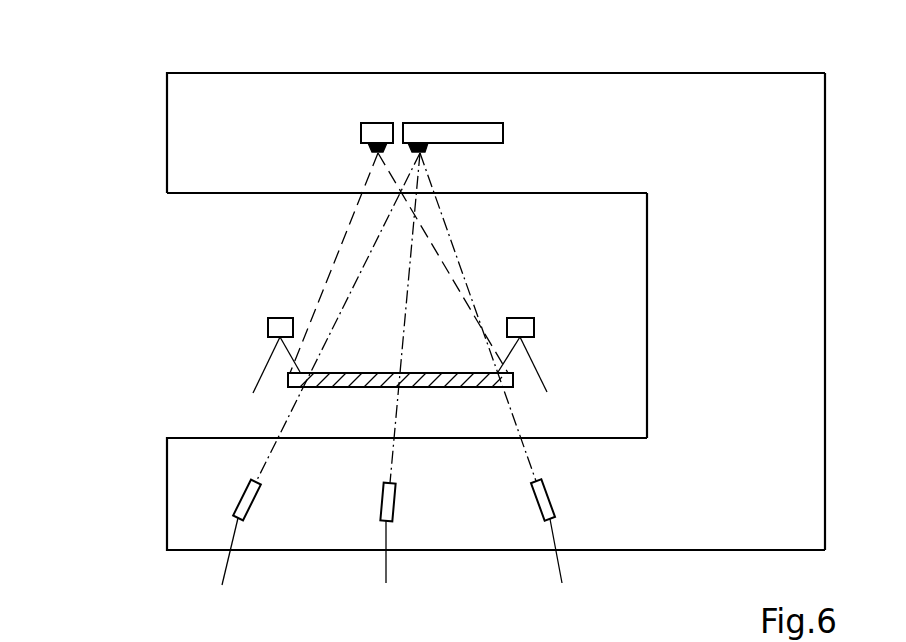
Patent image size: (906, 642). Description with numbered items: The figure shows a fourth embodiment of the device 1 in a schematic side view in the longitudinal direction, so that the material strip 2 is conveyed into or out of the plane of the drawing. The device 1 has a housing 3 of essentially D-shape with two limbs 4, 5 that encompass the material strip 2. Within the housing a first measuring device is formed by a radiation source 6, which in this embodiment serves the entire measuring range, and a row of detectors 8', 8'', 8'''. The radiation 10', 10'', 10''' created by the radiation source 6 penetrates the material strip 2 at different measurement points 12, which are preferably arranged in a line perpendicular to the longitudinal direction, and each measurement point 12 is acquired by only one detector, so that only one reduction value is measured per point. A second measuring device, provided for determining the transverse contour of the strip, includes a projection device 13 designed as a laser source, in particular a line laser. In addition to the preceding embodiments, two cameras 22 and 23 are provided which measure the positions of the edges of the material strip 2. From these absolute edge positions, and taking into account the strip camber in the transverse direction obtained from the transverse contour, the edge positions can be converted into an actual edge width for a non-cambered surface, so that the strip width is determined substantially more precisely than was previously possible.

The device 1 is at (106, 108).
The material strip 2 is at (295, 388).
The housing 3 is at (813, 260).
The limb 4 is at (237, 92).
The limb 5 is at (312, 532).
The radiation source 6 is at (475, 131).
The detector 8' is at (236, 546).
The detector 8'' is at (386, 548).
The detector 8''' is at (555, 545).
The radiation 10' is at (338, 317).
The radiation 10'' is at (341, 318).
The radiation 10''' is at (496, 317).
The measurement point 12 is at (403, 386).
The projection device 13 is at (376, 130).
The camera 22 is at (268, 328).
The camera 23 is at (535, 325).